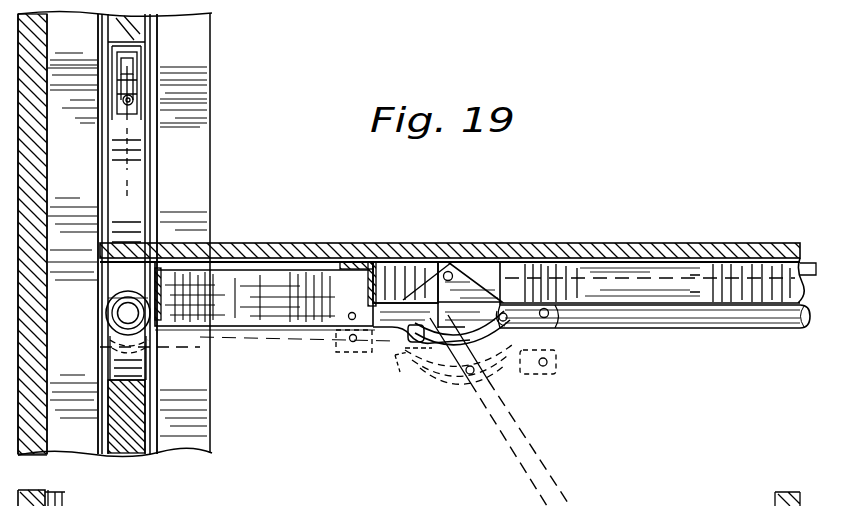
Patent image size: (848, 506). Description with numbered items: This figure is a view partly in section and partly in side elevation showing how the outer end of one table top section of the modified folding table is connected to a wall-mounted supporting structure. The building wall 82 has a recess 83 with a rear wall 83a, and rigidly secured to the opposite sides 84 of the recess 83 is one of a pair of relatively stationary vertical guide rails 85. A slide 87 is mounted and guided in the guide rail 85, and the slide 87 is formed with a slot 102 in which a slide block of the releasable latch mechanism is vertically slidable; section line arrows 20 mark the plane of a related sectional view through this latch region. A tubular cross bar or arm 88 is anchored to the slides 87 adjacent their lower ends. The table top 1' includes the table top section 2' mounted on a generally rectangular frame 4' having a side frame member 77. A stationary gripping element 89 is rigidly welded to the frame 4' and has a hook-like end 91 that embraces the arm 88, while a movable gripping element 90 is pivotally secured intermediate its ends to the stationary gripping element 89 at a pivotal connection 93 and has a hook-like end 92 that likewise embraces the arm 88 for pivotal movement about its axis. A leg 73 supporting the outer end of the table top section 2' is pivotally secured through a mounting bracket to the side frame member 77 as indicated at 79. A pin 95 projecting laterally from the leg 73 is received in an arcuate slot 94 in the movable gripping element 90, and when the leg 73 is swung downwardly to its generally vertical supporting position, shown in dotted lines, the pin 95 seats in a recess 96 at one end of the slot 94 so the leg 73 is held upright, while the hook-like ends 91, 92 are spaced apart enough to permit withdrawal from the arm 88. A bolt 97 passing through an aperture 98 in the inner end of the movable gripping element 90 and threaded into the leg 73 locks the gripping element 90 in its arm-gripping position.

The section line 20— 20 is at (92, 27).
The building wall 82 is at (212, 50).
The slot 102 is at (135, 82).
The slide 87 is at (137, 150).
The opposite sides of the recess 84 is at (190, 192).
The recess 83 is at (185, 427).
The rear wall of the recess 83a is at (50, 446).
The guide rail 85 is at (155, 452).
The table top section 2' is at (450, 231).
The table top 1' is at (450, 230).
The side frame member 77 is at (748, 270).
The frame 4' is at (681, 333).
The leg 73 is at (740, 318).
The bolt 97 is at (560, 322).
The gripping element 89 is at (270, 262).
The pivotal connection 93 is at (350, 318).
The movable gripping element 90 is at (385, 327).
The pivotal connection 79 is at (449, 272).
The pin 95 is at (505, 323).
The recess 96 is at (412, 336).
The arcuate slot 94 is at (465, 340).
The aperture 98 is at (557, 366).
The hook-like end 92 is at (108, 293).
The tubular cross bar or arm 88 is at (111, 320).
The hook-like end 91 is at (116, 330).